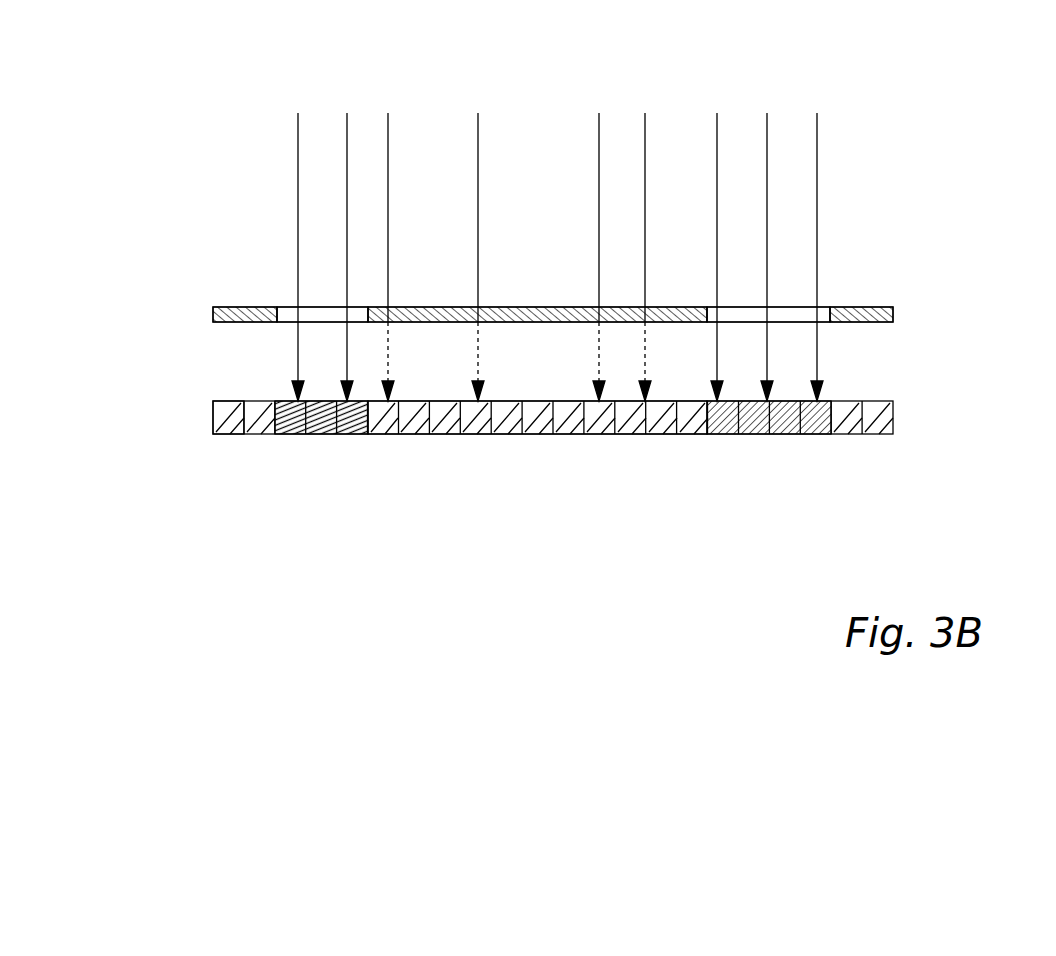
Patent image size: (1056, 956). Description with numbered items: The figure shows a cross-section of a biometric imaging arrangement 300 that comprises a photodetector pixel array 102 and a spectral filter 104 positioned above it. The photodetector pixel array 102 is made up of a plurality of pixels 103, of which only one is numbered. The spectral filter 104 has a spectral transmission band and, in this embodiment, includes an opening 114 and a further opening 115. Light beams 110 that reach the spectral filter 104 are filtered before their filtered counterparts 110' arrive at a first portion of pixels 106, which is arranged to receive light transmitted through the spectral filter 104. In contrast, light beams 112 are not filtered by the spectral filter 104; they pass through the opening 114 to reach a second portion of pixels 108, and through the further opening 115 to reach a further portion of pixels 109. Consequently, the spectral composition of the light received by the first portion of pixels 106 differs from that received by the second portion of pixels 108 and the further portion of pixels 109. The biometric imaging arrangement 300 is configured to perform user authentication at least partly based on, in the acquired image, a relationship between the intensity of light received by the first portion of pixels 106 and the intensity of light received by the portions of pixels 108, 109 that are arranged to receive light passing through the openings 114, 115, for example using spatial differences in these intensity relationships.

The biometric imaging arrangement 300 is at (247, 176).
The photodetector pixel array 102 is at (908, 415).
The pixel 103 is at (226, 434).
The spectral filter 104 is at (206, 313).
The first portion of pixels 106 is at (707, 470).
The second portion of pixels 108 is at (832, 470).
The further portion of pixels 109 is at (368, 470).
The light beams 110 is at (516, 217).
The filtered counterparts 110' is at (516, 332).
The light beams 112 is at (345, 184).
The opening 114 is at (824, 302).
The further opening 115 is at (286, 301).